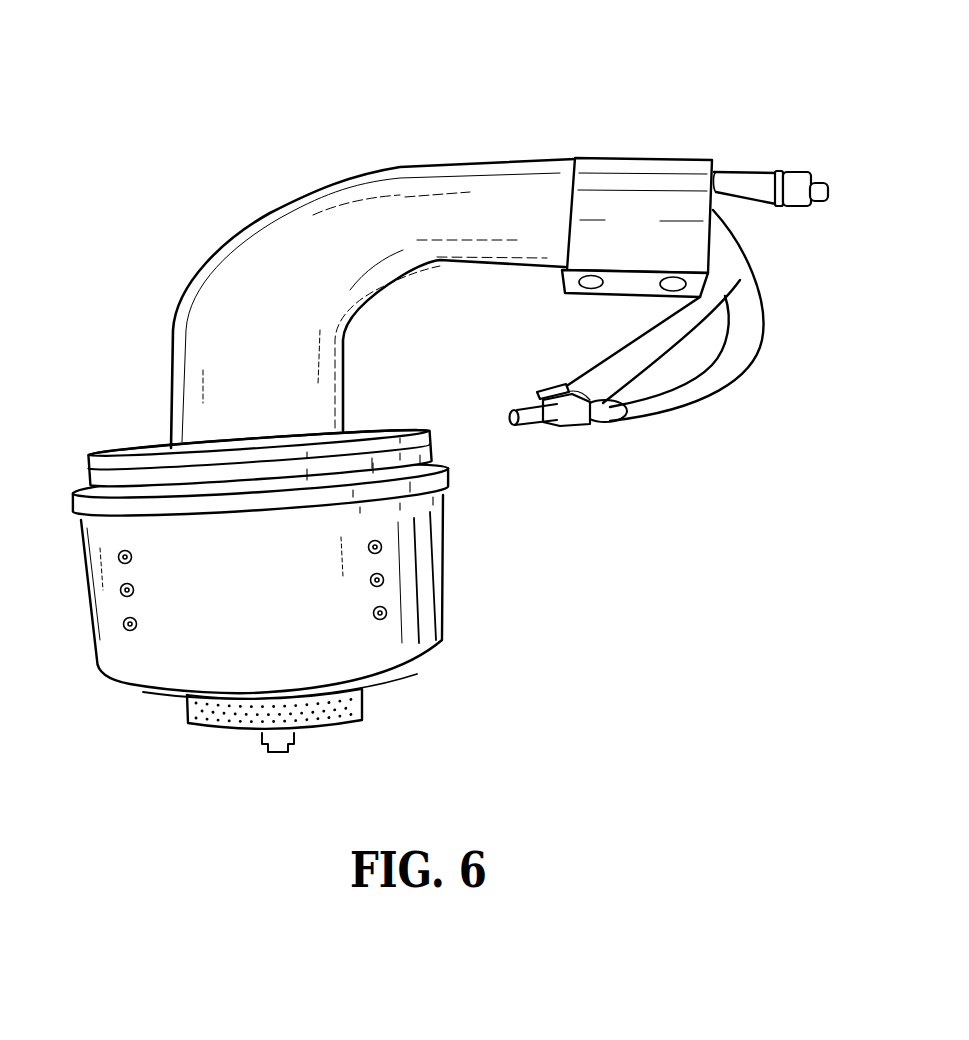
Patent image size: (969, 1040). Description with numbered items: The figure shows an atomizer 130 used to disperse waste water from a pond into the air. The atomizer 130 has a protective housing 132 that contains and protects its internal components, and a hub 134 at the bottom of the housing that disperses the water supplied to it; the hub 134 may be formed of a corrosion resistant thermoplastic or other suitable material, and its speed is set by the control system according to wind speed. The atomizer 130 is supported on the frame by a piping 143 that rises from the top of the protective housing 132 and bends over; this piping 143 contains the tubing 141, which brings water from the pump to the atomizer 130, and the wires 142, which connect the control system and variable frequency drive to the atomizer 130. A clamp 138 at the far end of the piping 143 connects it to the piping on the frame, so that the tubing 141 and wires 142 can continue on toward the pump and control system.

The atomizer 130 is at (343, 562).
The protective housing 132 is at (283, 600).
The hub 134 is at (172, 786).
The clamp 138 is at (597, 148).
The tubing 141 is at (680, 330).
The wire 142 is at (797, 192).
The piping 143 is at (233, 283).